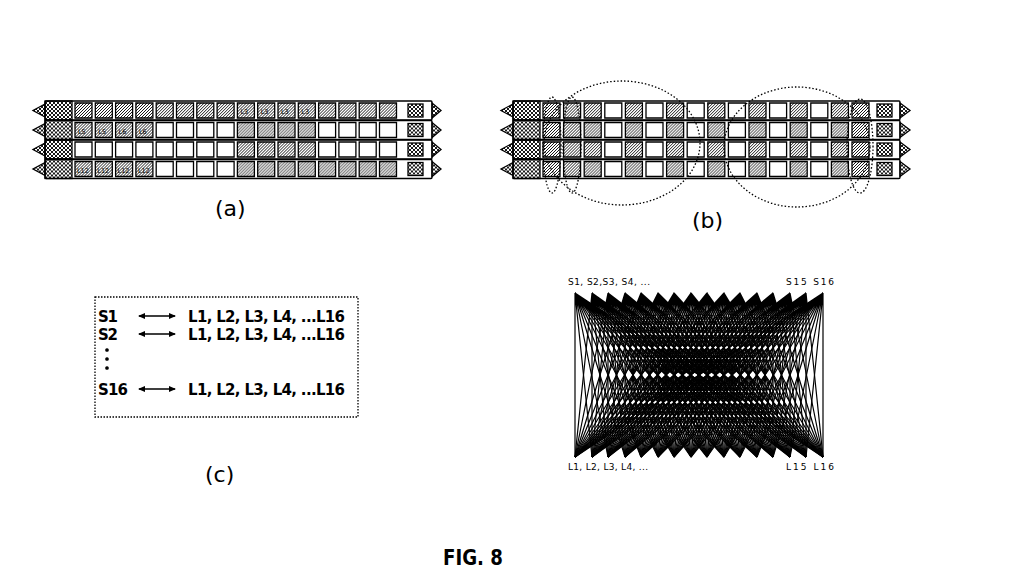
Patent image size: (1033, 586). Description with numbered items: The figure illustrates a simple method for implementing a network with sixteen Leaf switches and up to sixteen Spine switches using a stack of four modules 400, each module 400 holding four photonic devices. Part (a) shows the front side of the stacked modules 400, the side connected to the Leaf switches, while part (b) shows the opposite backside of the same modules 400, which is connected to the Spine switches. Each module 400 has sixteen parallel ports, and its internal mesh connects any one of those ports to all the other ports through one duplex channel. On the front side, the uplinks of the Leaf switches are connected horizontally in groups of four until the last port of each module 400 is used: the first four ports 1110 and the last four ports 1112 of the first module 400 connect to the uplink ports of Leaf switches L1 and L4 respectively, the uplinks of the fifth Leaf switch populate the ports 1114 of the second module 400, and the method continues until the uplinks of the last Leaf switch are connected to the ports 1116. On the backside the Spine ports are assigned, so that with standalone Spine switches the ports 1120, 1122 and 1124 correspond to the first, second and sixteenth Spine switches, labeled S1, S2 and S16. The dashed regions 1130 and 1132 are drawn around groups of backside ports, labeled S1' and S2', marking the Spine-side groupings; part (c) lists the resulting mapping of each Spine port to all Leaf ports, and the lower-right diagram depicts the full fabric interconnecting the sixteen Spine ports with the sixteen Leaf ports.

The module 400 is at (506, 104).
The first four ports of the first module 1110 is at (139, 95).
The ports of the second module 1114 is at (157, 101).
The last four ports of the first module 1112 is at (345, 95).
The ports for the last Leaf switch 1116 is at (350, 184).
The ports of the first Spine switch 1120 is at (555, 95).
The ports of the second Spine switch 1122 is at (573, 95).
The ports of the sixteenth Spine switch 1124 is at (873, 102).
The first source region S1' 1130 is at (661, 81).
The second source region S2' 1132 is at (818, 78).